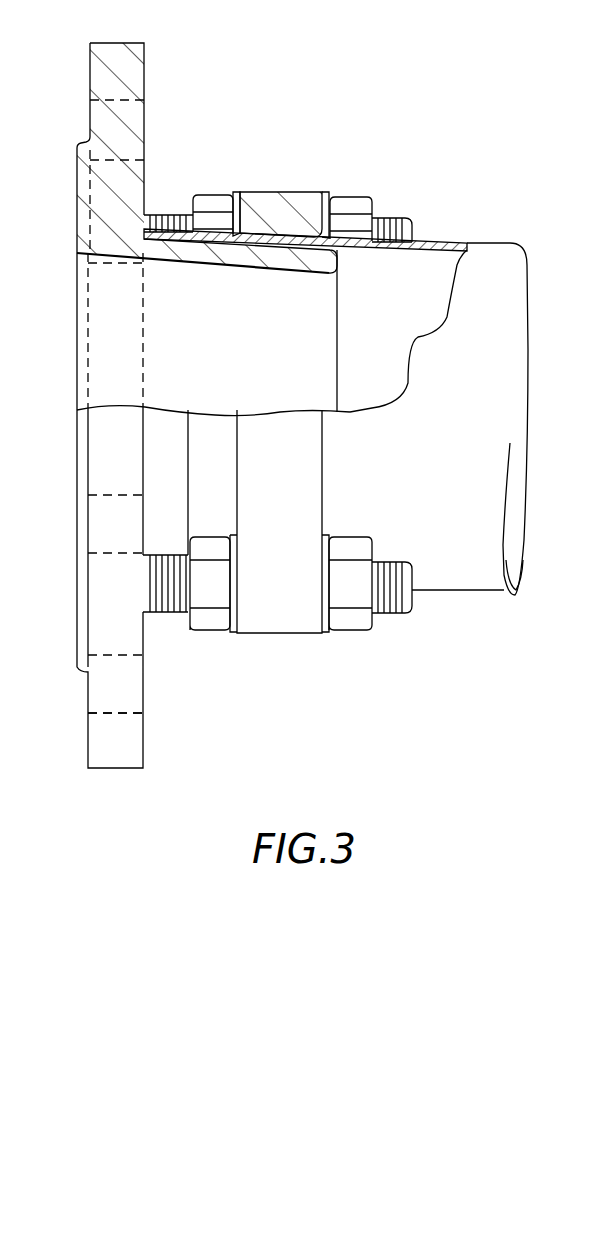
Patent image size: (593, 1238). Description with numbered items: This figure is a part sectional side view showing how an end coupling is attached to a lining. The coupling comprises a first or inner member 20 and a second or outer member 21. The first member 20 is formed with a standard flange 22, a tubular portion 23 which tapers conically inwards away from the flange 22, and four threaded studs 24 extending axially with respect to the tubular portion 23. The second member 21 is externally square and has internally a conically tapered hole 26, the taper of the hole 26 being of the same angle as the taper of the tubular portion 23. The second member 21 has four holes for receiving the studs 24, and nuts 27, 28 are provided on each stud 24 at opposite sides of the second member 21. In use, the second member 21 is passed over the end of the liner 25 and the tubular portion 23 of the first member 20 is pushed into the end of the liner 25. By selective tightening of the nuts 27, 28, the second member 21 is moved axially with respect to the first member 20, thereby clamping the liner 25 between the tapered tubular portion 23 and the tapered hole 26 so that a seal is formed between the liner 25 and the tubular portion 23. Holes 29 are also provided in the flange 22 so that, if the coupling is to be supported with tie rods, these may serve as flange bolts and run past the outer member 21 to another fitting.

The first member 20 is at (193, 387).
The second member 21 is at (302, 204).
The flange 22 is at (118, 76).
The tubular portion 23 is at (232, 276).
The threaded studs 24 is at (400, 218).
The liner 25 is at (358, 250).
The conically tapered hole 26 is at (255, 236).
The nut 27 is at (214, 200).
The nut 28 is at (352, 208).
The holes 29 is at (125, 716).